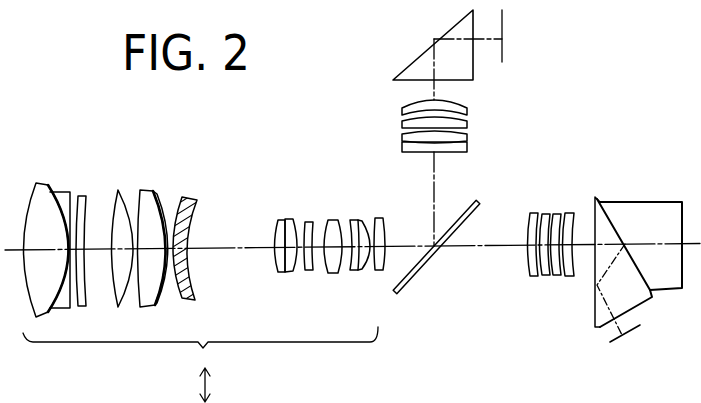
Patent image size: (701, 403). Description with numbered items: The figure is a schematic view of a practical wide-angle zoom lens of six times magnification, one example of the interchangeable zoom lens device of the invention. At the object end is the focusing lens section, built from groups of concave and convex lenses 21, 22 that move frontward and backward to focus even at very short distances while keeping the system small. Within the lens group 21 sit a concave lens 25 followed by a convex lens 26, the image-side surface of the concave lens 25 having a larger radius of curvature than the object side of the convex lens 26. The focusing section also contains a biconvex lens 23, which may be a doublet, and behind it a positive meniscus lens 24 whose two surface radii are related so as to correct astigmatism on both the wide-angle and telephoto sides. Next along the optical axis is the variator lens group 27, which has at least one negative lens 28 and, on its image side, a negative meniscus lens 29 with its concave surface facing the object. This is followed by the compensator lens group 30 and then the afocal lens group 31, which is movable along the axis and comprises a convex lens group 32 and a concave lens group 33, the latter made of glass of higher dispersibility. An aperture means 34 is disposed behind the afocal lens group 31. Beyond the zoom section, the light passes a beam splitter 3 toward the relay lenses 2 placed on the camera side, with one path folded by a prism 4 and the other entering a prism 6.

The relay lenses 2 is at (488, 100).
The beam splitter 3 is at (430, 258).
The prism 4 is at (460, 67).
The erecting prism 6 is at (638, 207).
The lens group 21 is at (81, 229).
The lens group 22 is at (202, 229).
The biconvex lens 23 is at (157, 304).
The positive lens 24 is at (190, 301).
The concave lens 25 is at (62, 303).
The convex lens 26 is at (80, 305).
The variator lens group 27 is at (281, 250).
The negative lens 28 is at (279, 273).
The negative meniscus lens 29 is at (308, 273).
The compensator lens group 30 is at (347, 206).
The afocal lens group 31 is at (367, 249).
The convex lens group 32 is at (377, 275).
The concave lens group 33 is at (355, 275).
The aperture means 34 is at (386, 197).